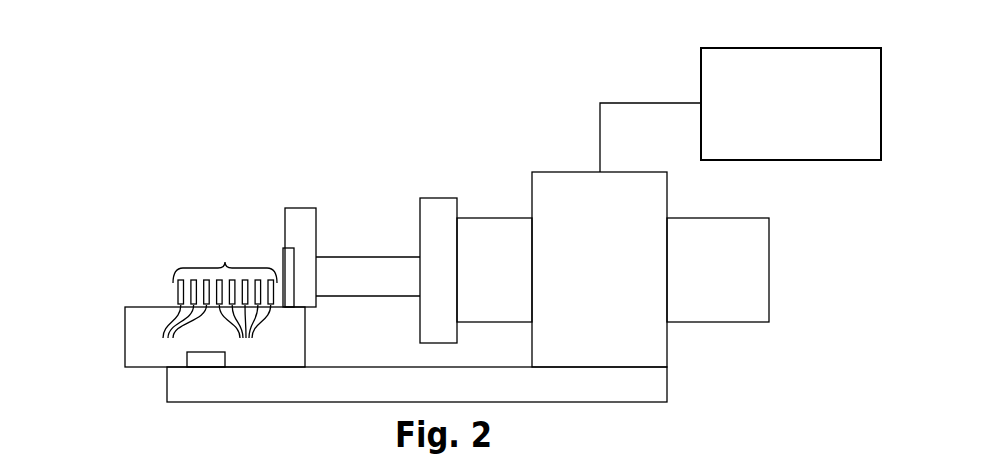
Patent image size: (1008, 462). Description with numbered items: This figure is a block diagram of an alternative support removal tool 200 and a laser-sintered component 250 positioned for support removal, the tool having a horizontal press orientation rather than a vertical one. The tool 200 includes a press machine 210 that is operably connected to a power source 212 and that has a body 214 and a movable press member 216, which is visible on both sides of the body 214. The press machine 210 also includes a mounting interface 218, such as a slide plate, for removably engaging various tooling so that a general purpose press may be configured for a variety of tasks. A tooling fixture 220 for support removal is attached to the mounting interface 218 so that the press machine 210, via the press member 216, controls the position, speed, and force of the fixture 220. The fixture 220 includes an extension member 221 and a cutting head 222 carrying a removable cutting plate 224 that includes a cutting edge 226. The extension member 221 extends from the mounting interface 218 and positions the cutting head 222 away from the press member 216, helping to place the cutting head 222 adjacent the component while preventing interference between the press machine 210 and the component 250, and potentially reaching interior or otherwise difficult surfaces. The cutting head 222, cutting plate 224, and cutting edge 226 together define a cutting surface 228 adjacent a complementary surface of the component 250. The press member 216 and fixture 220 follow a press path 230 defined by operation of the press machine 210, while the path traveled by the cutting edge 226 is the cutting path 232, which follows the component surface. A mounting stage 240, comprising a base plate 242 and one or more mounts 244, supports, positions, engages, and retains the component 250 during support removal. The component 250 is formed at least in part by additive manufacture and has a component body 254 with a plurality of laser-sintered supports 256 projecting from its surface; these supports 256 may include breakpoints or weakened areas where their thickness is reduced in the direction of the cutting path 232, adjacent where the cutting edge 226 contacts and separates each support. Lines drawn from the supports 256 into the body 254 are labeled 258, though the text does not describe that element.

The support removal tool 200 is at (262, 118).
The press machine 210 is at (551, 133).
The power source 212 is at (699, 73).
The body 214 is at (623, 172).
The press member 216 is at (492, 218).
The mounting interface 218 is at (442, 198).
The tooling fixture 220 is at (334, 163).
The extension member 221 is at (353, 257).
The cutting head 222 is at (317, 232).
The cutting plate 224 is at (283, 255).
The cutting edge 226 is at (284, 310).
The cutting surface 228 is at (307, 307).
The press path 230 is at (235, 207).
The cutting path 232 is at (123, 307).
The mounting stage 240 is at (148, 393).
The base plate 242 is at (668, 380).
The mount 244 is at (203, 358).
The laser-sintered component 250 is at (147, 282).
The component body 254 is at (125, 335).
The laser-sintered supports 256 is at (225, 268).
The fibers 258 is at (209, 336).